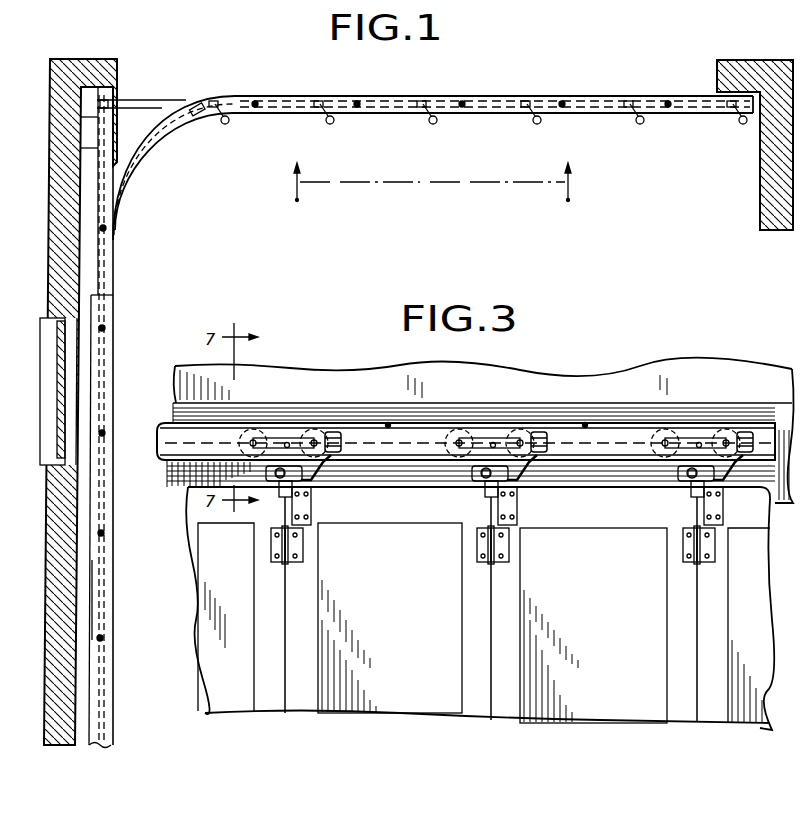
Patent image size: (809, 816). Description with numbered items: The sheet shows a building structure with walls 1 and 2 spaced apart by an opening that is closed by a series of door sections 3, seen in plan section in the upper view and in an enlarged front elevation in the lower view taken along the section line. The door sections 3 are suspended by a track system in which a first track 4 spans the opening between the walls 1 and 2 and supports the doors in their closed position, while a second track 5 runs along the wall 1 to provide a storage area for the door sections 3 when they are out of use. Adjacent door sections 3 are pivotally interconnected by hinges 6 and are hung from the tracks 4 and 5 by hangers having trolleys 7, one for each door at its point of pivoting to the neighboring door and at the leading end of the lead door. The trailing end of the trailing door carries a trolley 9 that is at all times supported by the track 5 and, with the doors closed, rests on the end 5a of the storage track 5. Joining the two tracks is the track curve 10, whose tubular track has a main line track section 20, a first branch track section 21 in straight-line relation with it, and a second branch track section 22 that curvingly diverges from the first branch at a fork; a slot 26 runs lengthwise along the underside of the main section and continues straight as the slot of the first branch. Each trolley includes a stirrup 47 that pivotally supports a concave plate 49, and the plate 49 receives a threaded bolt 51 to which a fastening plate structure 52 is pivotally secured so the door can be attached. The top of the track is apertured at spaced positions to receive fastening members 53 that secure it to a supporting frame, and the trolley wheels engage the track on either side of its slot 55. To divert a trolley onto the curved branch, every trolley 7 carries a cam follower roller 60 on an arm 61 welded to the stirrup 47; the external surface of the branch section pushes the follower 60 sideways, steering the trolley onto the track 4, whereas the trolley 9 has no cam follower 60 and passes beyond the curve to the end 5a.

In FIG. 1, the wall 1 is at (48, 230).
In FIG. 1, the wall 2 is at (776, 230).
In FIG. 1, the door sections 3 is at (150, 100).
In FIG. 3, the door sections 3 is at (222, 679).
In FIG. 1, the first track 4 is at (480, 114).
In FIG. 3, the first track 4 is at (622, 432).
In FIG. 1, the second track 5 is at (114, 300).
In FIG. 1, the end of storage track 5a is at (117, 98).
In FIG. 3, the hinges 6 is at (303, 546).
In FIG. 1, the trolleys 7 is at (316, 102).
In FIG. 3, the trolleys 7 is at (288, 436).
In FIG. 1, the trolley 9 is at (100, 117).
In FIG. 1, the track curve 10 is at (134, 185).
In FIG. 1, the main line track section 20 is at (114, 266).
In FIG. 1, the first branch track section 21 is at (95, 148).
In FIG. 1, the second branch track section 22 is at (160, 146).
In FIG. 1, the slot 26 is at (105, 598).
In FIG. 3, the stirrup 47 is at (472, 474).
In FIG. 3, the concave plate 49 is at (484, 480).
In FIG. 3, the threaded bolt 51 is at (490, 490).
In FIG. 3, the fastening plate structure 52 is at (312, 506).
In FIG. 1, the fastening members 53 is at (357, 104).
In FIG. 3, the fastening members 53 is at (390, 423).
In FIG. 1, the slot 55 is at (580, 102).
In FIG. 3, the slot 55 is at (612, 465).
In FIG. 1, the cam follower roller 60 is at (432, 124).
In FIG. 3, the cam follower roller 60 is at (336, 440).
In FIG. 1, the arm 61 is at (330, 117).
In FIG. 3, the arm 61 is at (322, 476).